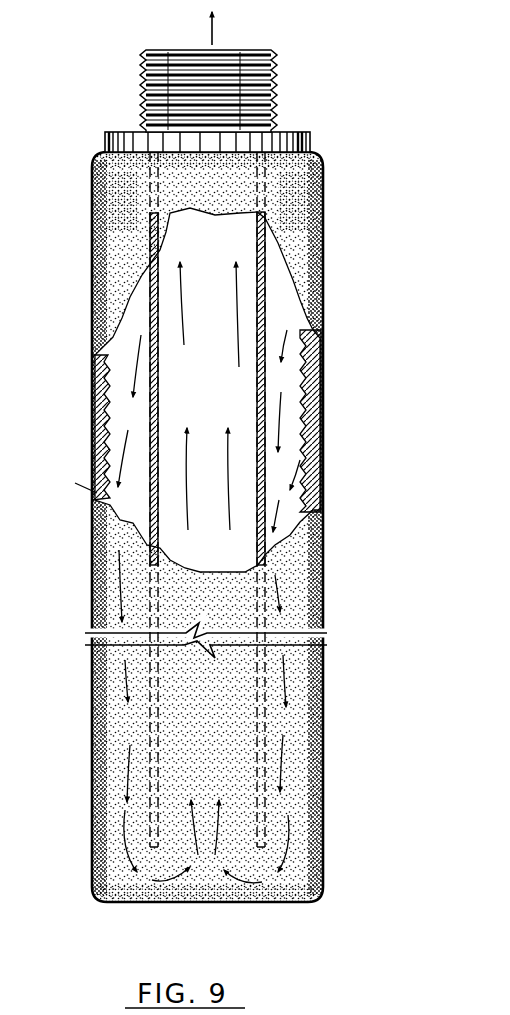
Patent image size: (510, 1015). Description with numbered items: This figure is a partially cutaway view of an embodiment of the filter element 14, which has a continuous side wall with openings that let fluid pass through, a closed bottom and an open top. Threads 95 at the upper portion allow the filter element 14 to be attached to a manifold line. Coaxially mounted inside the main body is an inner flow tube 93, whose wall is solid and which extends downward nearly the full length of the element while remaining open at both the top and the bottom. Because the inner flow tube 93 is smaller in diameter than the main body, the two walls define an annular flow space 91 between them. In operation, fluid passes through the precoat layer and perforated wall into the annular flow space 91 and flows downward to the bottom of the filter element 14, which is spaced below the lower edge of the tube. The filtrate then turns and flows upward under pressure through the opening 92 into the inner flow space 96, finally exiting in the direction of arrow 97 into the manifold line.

The filter element 14 is at (334, 236).
The annular flow space 91 is at (127, 352).
The opening 92 is at (172, 847).
The inner flow tube 93 is at (265, 380).
The threads 95 is at (278, 101).
The inner flow space 96 is at (224, 392).
The arrow 97 is at (215, 40).